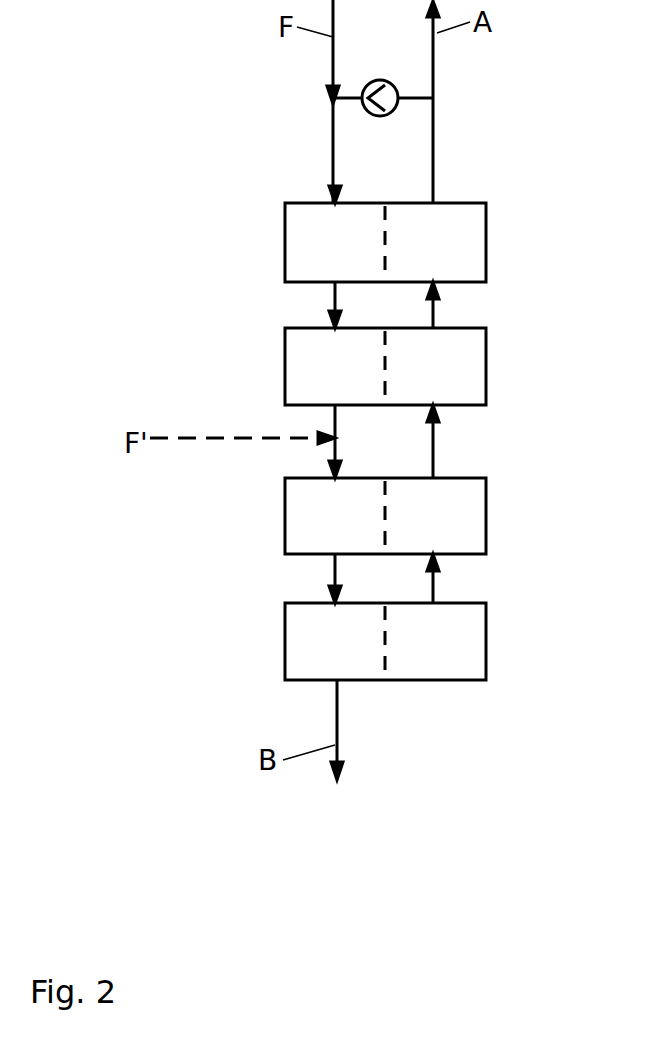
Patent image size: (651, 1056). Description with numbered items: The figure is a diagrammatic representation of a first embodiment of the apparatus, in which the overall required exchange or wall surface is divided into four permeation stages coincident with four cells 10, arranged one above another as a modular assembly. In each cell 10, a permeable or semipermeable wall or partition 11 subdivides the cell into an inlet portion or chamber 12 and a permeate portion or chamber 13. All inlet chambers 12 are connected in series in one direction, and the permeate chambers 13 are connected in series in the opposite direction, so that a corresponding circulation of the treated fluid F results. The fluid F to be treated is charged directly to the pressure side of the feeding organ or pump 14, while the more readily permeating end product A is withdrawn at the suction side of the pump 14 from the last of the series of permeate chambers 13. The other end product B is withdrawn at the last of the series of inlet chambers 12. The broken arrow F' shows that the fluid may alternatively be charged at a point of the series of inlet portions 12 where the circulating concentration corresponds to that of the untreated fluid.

The permeation stage or cell 10 is at (285, 224).
The permeable or semipermeable wall or partition 11 is at (387, 220).
The inlet portion or chamber 12 is at (350, 261).
The permeate portion or chamber 13 is at (452, 261).
The fluid mover or pump 14 is at (396, 88).